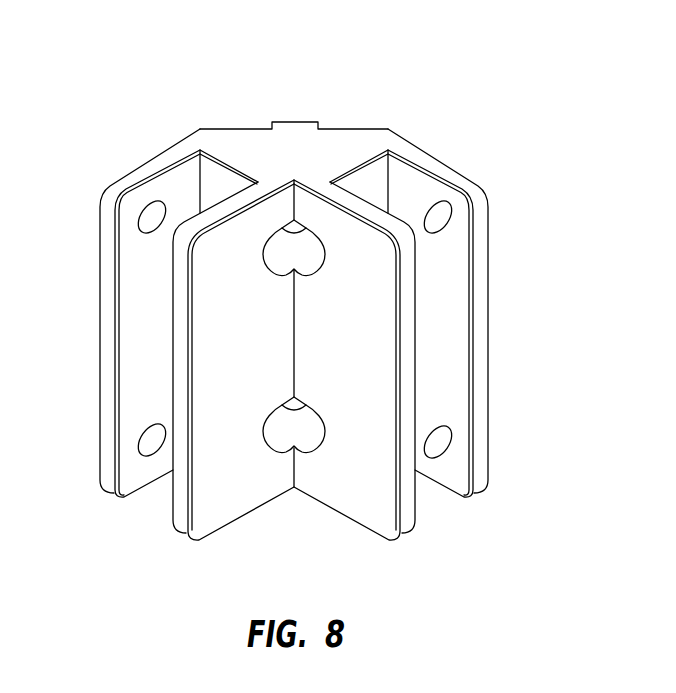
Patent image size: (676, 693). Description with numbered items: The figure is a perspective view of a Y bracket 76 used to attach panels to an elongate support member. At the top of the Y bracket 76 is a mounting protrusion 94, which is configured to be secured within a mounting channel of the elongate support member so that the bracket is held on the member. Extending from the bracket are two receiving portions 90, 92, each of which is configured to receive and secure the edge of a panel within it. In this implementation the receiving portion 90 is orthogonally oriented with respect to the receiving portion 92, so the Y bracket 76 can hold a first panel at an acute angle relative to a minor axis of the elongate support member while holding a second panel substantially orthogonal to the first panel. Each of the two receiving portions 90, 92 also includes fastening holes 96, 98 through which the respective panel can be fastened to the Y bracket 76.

The Y bracket 76 is at (336, 296).
The receiving portion 90 is at (419, 319).
The receiving portion 92 is at (155, 313).
The mounting protrusion 94 is at (303, 121).
The fastening hole 96 is at (148, 446).
The fastening hole 98 is at (438, 448).